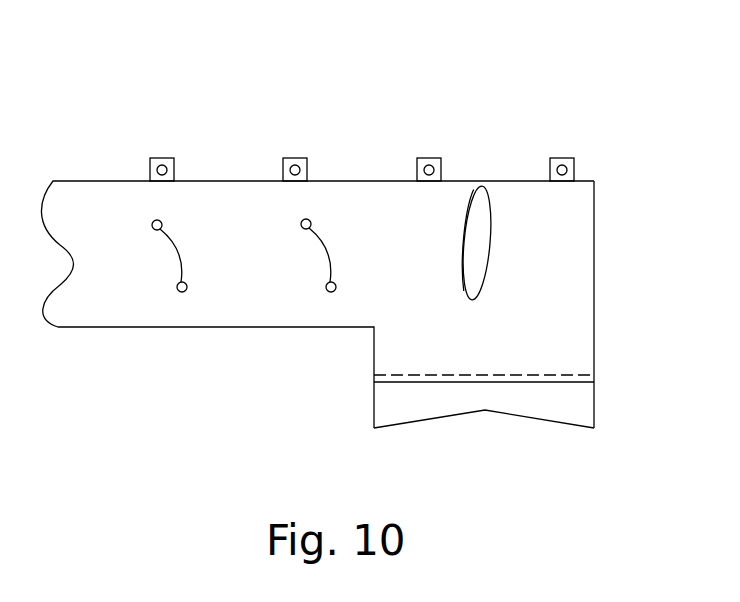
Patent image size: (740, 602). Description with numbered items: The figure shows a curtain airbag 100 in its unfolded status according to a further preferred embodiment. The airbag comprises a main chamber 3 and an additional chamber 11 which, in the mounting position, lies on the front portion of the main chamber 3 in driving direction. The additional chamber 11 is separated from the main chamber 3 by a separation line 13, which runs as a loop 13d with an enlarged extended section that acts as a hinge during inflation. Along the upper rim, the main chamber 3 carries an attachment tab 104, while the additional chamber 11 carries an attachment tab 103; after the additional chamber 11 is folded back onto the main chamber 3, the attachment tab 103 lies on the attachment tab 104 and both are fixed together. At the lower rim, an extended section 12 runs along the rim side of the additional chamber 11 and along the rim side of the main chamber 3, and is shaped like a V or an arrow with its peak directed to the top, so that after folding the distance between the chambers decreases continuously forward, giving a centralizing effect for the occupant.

The curtain airbag 100 is at (272, 110).
The main chamber 3 is at (367, 208).
The additional chamber 11 is at (577, 257).
The extended section 12 is at (567, 403).
The separation line 13 is at (490, 210).
The loop 13d is at (466, 205).
The attachment tab 103 is at (575, 160).
The attachment tab 104 is at (430, 158).